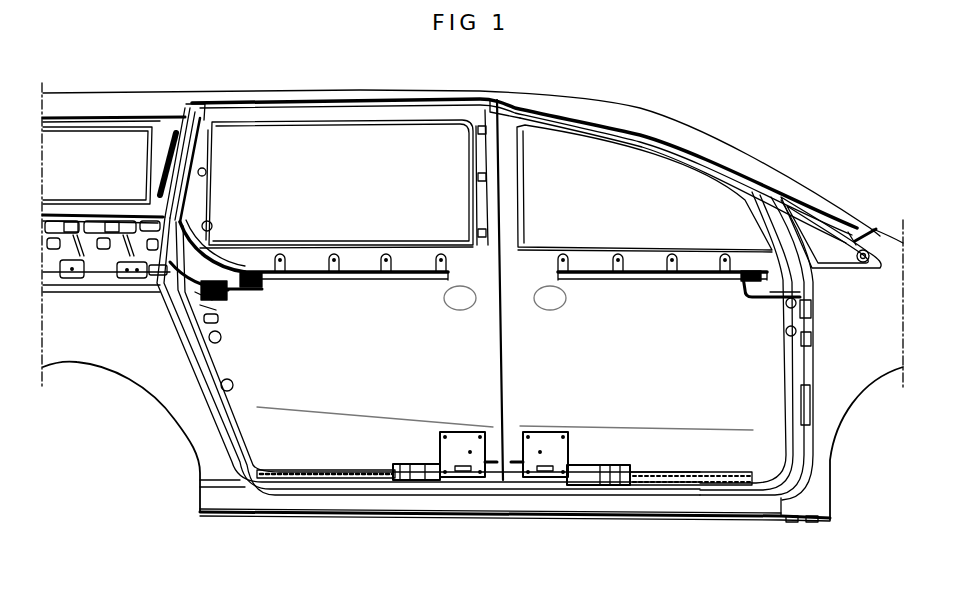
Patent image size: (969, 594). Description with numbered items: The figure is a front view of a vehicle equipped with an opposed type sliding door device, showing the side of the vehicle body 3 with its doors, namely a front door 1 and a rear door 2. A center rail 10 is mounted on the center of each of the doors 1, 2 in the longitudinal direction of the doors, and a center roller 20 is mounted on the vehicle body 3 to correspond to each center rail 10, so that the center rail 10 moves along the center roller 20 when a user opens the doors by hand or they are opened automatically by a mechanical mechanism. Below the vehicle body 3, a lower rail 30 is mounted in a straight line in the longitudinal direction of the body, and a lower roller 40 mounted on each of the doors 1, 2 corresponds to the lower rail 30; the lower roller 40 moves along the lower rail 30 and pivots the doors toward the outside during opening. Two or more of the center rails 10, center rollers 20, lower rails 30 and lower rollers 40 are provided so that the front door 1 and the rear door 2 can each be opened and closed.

The front door 1 is at (710, 427).
The rear door 2 is at (313, 425).
The vehicle body 3 is at (843, 392).
The center rail 10 is at (360, 271).
The center roller 20 is at (262, 288).
The lower rail 30 is at (362, 472).
The lower roller 40 is at (460, 460).